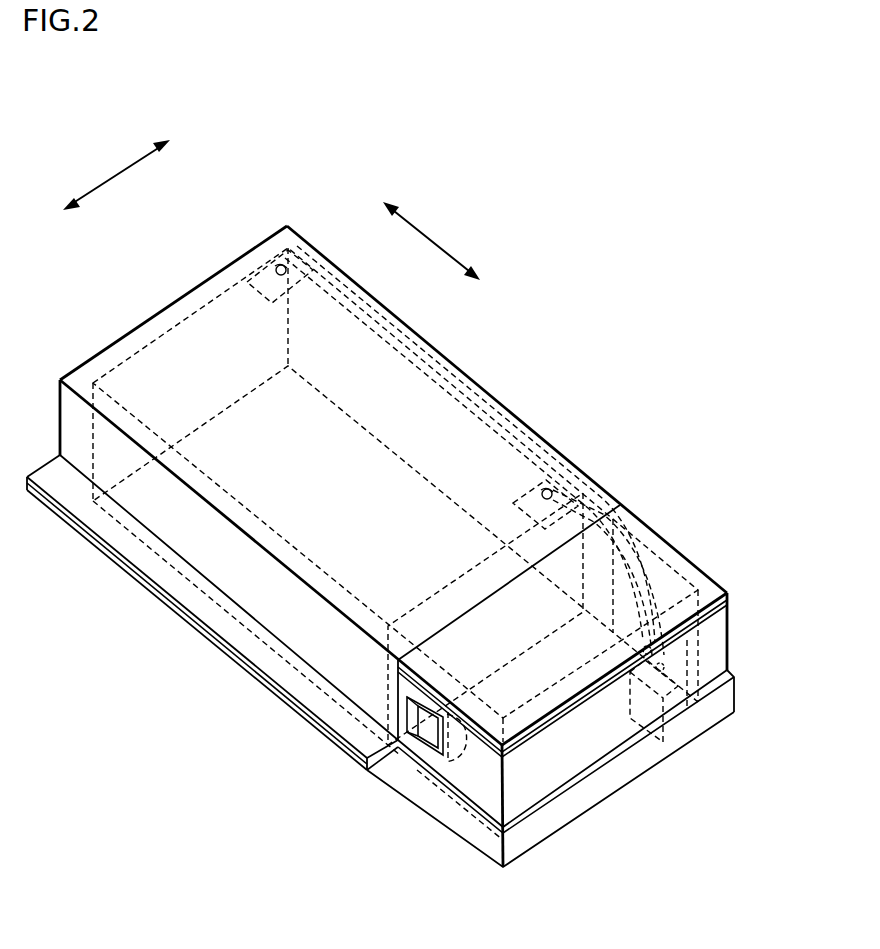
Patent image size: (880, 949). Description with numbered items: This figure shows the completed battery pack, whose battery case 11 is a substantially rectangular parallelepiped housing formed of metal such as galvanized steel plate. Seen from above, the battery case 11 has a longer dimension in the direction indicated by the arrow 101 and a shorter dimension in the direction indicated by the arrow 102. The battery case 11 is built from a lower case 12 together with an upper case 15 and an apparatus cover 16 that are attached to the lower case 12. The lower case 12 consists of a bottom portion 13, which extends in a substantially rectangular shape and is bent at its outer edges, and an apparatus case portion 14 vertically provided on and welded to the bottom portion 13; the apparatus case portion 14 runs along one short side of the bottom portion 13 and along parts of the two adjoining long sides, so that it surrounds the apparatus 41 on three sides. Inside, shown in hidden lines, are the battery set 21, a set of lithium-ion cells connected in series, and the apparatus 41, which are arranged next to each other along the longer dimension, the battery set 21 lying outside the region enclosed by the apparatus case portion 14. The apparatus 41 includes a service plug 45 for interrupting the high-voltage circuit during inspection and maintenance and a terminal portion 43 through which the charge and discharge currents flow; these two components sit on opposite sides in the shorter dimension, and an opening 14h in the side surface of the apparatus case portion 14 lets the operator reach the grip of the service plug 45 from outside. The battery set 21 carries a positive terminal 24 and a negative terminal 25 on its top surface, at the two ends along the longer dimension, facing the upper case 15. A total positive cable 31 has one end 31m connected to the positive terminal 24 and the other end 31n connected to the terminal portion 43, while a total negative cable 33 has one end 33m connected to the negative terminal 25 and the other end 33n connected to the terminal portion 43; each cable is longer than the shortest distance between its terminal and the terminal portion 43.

The battery case 11 is at (112, 346).
The lower case 12 is at (655, 858).
The bottom portion 13 is at (578, 805).
The apparatus case portion 14 is at (597, 720).
The opening 14h is at (420, 733).
The upper case 15 is at (217, 287).
The apparatus cover 16 is at (690, 570).
The battery set 21 is at (187, 317).
The positive terminal 24 is at (248, 270).
The negative terminal 25 is at (567, 457).
The total positive cable 31 is at (493, 400).
The one end of total positive cable 31m is at (263, 262).
The other end of total positive cable 31n is at (707, 660).
The total negative cable 33 is at (643, 543).
The one end of total negative cable 33m is at (533, 490).
The other end of total negative cable 33n is at (707, 630).
The apparatus 41 is at (527, 723).
The terminal portion 43 is at (646, 735).
The service plug 45 is at (460, 760).
The arrow 101 is at (430, 237).
The arrow 102 is at (117, 172).